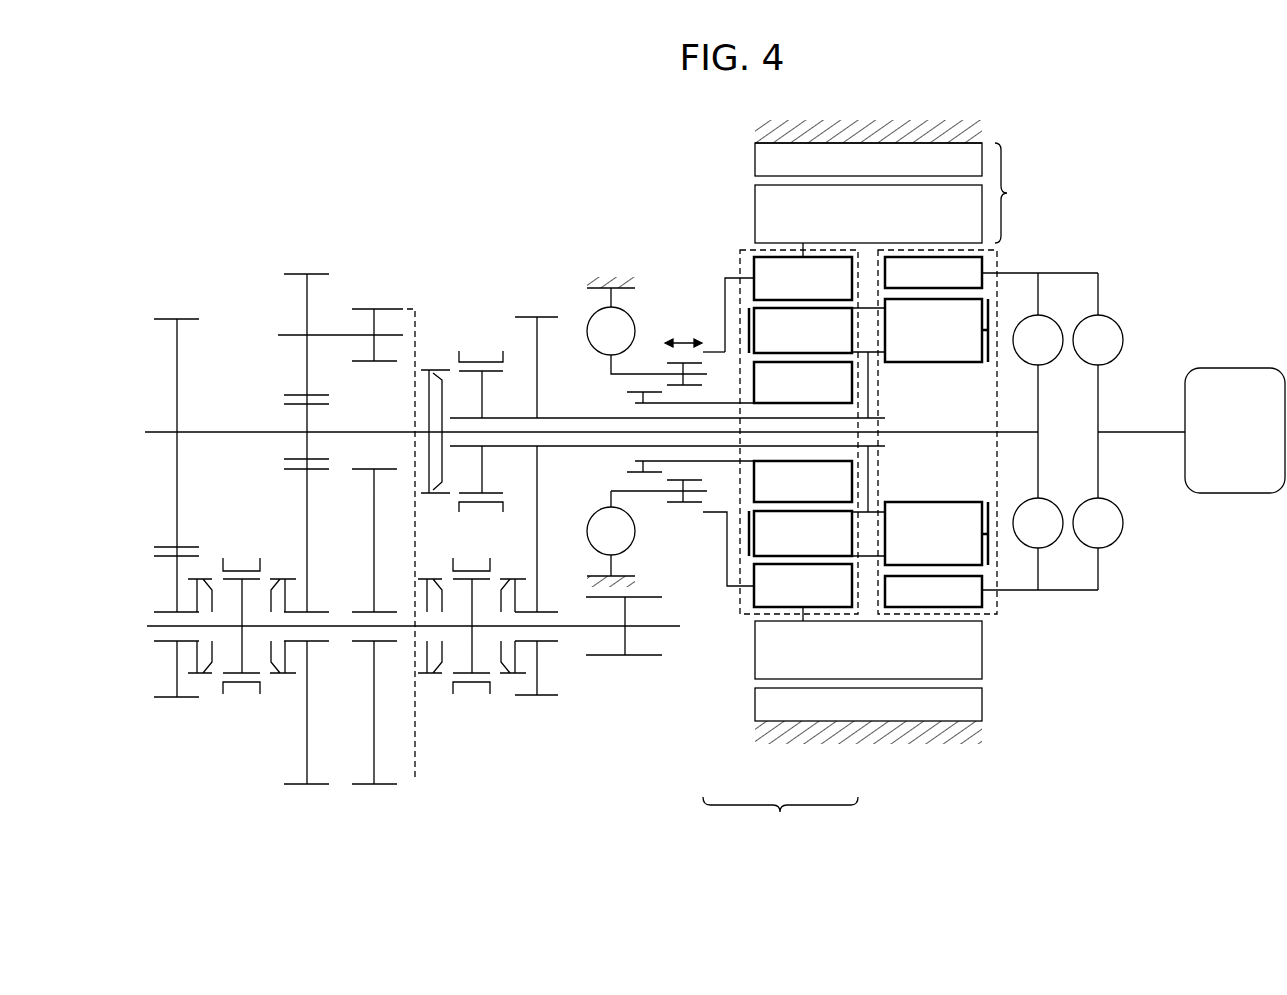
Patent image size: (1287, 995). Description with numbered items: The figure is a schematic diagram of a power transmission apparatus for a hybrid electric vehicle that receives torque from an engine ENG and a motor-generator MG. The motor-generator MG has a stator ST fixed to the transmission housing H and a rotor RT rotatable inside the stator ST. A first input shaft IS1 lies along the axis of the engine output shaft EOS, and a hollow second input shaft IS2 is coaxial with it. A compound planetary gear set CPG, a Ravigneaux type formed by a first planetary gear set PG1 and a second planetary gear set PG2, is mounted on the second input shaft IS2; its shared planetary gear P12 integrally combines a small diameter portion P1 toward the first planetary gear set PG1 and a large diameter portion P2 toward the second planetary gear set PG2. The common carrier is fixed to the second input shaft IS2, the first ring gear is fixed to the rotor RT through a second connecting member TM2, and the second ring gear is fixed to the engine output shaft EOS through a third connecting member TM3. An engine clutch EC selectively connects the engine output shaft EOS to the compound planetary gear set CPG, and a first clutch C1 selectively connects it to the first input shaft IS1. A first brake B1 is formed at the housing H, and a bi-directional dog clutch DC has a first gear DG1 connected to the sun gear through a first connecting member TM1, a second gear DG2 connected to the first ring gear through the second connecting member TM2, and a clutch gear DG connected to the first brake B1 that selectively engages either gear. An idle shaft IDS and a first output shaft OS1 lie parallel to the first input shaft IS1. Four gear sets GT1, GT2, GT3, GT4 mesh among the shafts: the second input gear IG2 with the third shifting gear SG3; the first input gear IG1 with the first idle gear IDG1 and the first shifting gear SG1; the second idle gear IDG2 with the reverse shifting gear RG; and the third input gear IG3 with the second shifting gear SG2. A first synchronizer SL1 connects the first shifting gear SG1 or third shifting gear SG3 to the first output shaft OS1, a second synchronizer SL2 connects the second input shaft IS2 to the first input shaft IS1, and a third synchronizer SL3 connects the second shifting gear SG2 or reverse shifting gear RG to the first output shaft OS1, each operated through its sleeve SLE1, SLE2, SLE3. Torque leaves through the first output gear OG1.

The first input shaft IS1 is at (957, 434).
The second input shaft IS2 is at (572, 448).
The first output shaft OS1 is at (672, 628).
The idle shaft IDS is at (331, 332).
The first input gear IG1 is at (306, 447).
The second input gear IG2 is at (176, 474).
The third input gear IG3 is at (540, 366).
The first idle gear IDG1 is at (306, 298).
The second idle gear IDG2 is at (376, 322).
The first shifting gear SG1 is at (308, 720).
The second shifting gear SG2 is at (540, 668).
The third shifting gear SG3 is at (176, 664).
The first gear set GT1 is at (176, 705).
The second gear set GT2 is at (306, 793).
The third gear set GT3 is at (372, 793).
The fourth gear set GT4 is at (538, 705).
The reverse shifting gear RG is at (375, 748).
The first sleeve SLE1 is at (233, 684).
The second sleeve SLE2 is at (473, 360).
The third sleeve SLE3 is at (463, 684).
The first synchronizer SL1 is at (252, 703).
The second synchronizer SL2 is at (493, 344).
The third synchronizer SL3 is at (482, 703).
The first output gear OG1 is at (640, 658).
The first brake B1 is at (647, 432).
The transmission housing H is at (873, 132).
The stator ST is at (868, 432).
The rotor RT is at (868, 432).
The motor-generator MG is at (1019, 193).
The first connecting member TM1 is at (670, 464).
The second connecting member TM2 is at (803, 251).
The third connecting member TM3 is at (1078, 272).
The clutch gear DG is at (668, 361).
The first gear DG1 is at (640, 391).
The second gear DG2 is at (704, 350).
The bi-directional dog clutch DC is at (688, 511).
The small diameter portion P1 is at (800, 432).
The large diameter portion P2 is at (936, 432).
The shared planetary gear P12 is at (867, 432).
The first planetary gear set PG1 is at (735, 560).
The second planetary gear set PG2 is at (907, 618).
The compound planetary gear set CPG is at (780, 818).
The first clutch C1 is at (1038, 431).
The engine clutch EC is at (1098, 431).
The engine output shaft EOS is at (1152, 434).
The engine ENG is at (1235, 430).